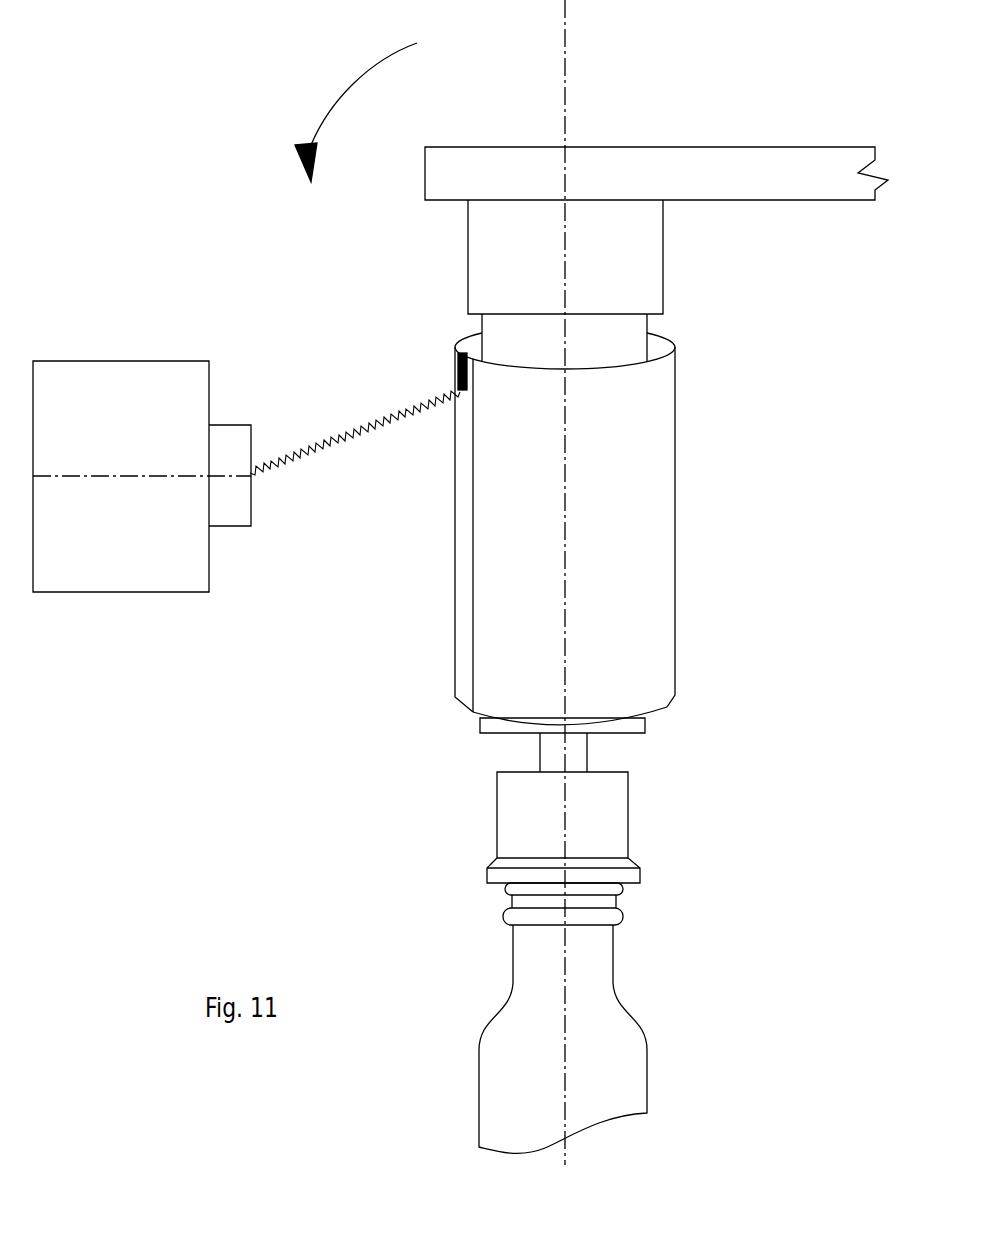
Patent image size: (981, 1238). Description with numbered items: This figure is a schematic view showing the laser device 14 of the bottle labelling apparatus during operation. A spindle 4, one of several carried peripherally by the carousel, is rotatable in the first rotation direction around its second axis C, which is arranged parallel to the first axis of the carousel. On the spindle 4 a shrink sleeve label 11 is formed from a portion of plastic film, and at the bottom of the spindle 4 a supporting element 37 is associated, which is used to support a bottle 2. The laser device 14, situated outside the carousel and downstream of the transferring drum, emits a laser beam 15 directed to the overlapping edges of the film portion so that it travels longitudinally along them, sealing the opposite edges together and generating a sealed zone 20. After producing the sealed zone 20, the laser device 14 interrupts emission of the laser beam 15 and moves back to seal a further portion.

The second axis C is at (565, 52).
The bottle 2 is at (607, 982).
The spindle 4 is at (695, 320).
The shrink sleeve label 11 is at (661, 450).
The laser device 14 is at (131, 340).
The laser beam 15 is at (355, 430).
The sealed zone 20 is at (455, 371).
The supporting element 37 is at (637, 790).